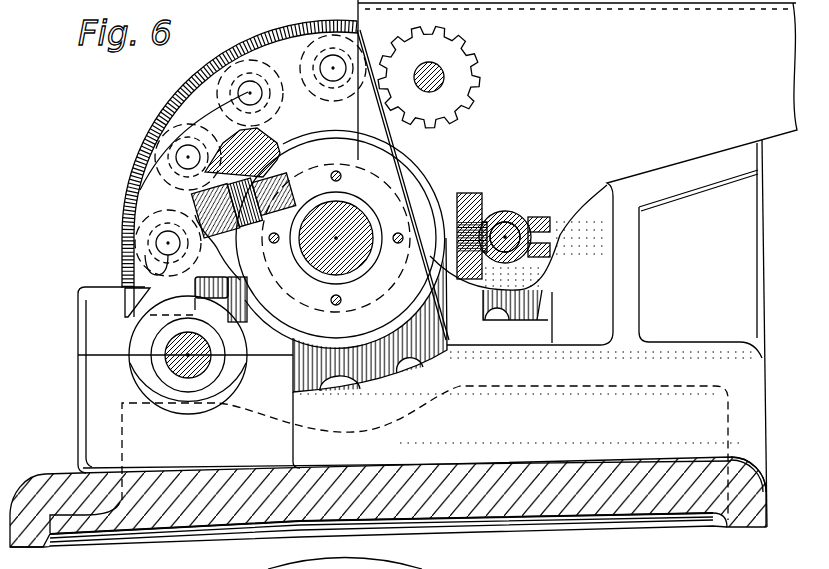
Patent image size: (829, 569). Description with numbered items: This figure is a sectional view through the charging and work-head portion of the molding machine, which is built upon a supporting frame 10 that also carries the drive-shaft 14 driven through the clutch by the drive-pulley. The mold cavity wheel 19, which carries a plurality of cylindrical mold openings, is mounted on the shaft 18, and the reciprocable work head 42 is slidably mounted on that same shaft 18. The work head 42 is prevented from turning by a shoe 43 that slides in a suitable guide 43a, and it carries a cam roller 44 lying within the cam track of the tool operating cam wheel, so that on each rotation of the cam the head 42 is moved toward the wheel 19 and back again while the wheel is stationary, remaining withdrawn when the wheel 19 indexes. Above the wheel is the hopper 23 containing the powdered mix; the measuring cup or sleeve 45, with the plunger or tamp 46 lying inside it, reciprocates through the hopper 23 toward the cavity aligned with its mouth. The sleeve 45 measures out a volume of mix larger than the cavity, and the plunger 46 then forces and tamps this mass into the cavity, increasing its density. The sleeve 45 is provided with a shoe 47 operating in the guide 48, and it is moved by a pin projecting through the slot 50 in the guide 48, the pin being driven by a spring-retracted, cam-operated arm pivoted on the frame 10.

The supporting frame 10 is at (450, 470).
The drive-shaft 14 is at (187, 356).
The shaft 18 is at (355, 218).
The mold cavity wheel 19 is at (301, 28).
The hopper 23 is at (655, 68).
The reciprocable work head 42 is at (277, 110).
The shoe 43 is at (160, 296).
The guide 43a is at (100, 322).
The cam roller 44 is at (197, 190).
The measuring cup or sleeve 45 is at (512, 228).
The plunger or tamp 46 is at (548, 225).
The shoe 47 is at (484, 214).
The guide 48 is at (470, 192).
The slot 50 is at (452, 236).